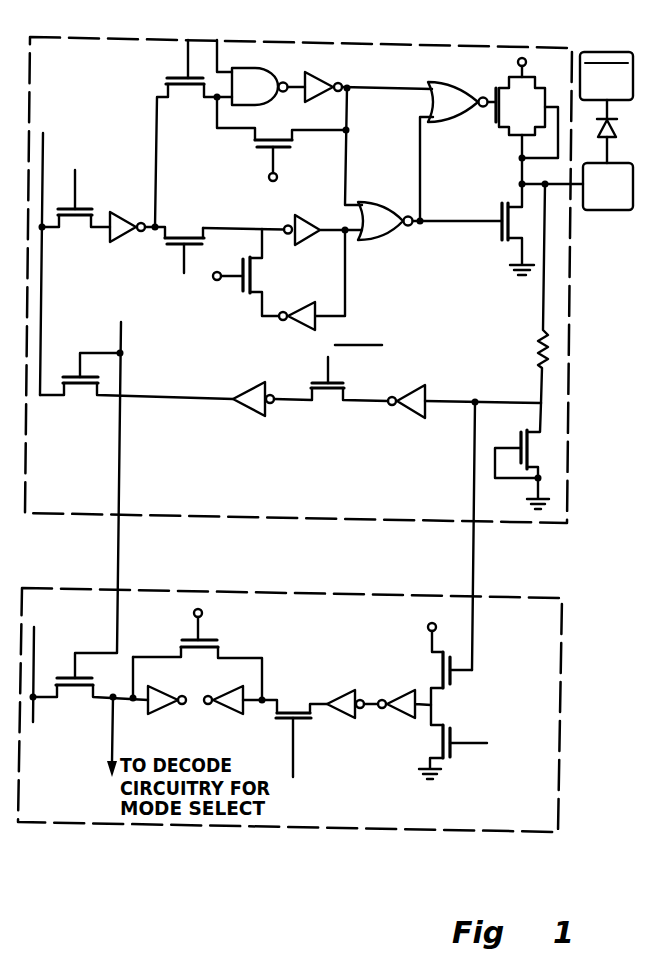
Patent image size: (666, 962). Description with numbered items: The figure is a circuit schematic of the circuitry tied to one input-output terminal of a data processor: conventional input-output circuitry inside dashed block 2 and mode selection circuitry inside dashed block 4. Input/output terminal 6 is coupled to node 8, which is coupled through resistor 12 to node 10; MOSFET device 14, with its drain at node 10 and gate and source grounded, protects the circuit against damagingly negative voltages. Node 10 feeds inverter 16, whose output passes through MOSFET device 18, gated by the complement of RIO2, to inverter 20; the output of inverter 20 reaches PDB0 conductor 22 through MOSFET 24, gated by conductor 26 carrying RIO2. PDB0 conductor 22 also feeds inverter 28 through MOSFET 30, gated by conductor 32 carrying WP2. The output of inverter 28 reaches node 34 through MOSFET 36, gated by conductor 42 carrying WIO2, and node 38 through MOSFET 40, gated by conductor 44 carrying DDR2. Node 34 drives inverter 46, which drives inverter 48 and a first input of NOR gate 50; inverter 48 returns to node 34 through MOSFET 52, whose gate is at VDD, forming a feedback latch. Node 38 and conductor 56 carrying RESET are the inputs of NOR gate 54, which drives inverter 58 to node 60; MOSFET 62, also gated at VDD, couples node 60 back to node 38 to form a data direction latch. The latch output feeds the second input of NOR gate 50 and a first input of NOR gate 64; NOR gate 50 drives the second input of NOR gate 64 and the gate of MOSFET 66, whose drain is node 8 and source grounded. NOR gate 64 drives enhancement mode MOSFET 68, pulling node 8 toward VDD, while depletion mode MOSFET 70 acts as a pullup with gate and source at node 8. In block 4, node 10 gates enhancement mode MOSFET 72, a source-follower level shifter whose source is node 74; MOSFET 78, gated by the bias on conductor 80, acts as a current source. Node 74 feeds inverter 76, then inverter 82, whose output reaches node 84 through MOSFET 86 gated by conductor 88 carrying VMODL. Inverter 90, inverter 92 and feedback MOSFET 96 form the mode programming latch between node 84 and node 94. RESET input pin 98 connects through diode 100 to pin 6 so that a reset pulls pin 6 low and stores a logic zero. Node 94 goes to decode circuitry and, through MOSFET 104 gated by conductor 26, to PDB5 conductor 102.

The dashed block 2 is at (72, 37).
The dashed block 4 is at (286, 592).
The input/output terminal 6 is at (606, 210).
The node 8 is at (546, 187).
The node 10 is at (539, 401).
The resistor 12 is at (537, 339).
The MOSFET device 14 is at (520, 440).
The inverter 16 is at (420, 412).
The MOSFET device 18 is at (314, 396).
The inverter 20 is at (246, 410).
The PDB0 conductor 22 is at (44, 276).
The MOSFET 24 is at (70, 390).
The conductor 26 is at (123, 354).
The inverter 28 is at (112, 241).
The MOSFET 30 is at (66, 208).
The conductor 32 is at (78, 194).
The node 34 is at (266, 228).
The MOSFET 36 is at (197, 236).
The node 38 is at (215, 99).
The MOSFET 40 is at (158, 88).
The conductor 42 is at (186, 262).
The conductor 44 is at (168, 77).
The inverter 46 is at (302, 219).
The inverter 48 is at (291, 312).
The NOR gate 50 is at (390, 202).
The MOSFET 52 is at (254, 270).
The NOR gate 54 is at (250, 104).
The conductor 56 is at (215, 66).
The inverter 58 is at (312, 100).
The node 60 is at (350, 90).
The MOSFET 62 is at (262, 148).
The NOR gate 64 is at (437, 82).
The MOSFET 66 is at (500, 210).
The enhancement mode MOSFET 68 is at (493, 86).
The depletion mode MOSFET 70 is at (556, 128).
The enhancement mode MOSFET 72 is at (452, 658).
The node 74 is at (433, 705).
The inverter 76 is at (401, 719).
The MOSFET 78 is at (456, 732).
The conductor 80 is at (455, 748).
The inverter 82 is at (345, 718).
The node 84 is at (264, 697).
The MOSFET 86 is at (280, 722).
The conductor 88 is at (295, 762).
The inverter 90 is at (225, 714).
The inverter 92 is at (168, 714).
The node 94 is at (131, 702).
The feedback MOSFET 96 is at (181, 640).
The RESET input pin 98 is at (623, 52).
The diode 100 is at (605, 132).
The PDB5 conductor 102 is at (36, 675).
The MOSFET 104 is at (61, 690).